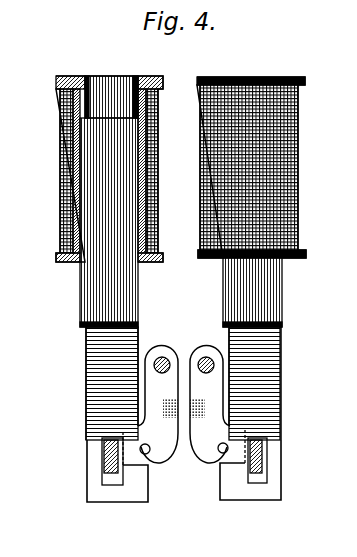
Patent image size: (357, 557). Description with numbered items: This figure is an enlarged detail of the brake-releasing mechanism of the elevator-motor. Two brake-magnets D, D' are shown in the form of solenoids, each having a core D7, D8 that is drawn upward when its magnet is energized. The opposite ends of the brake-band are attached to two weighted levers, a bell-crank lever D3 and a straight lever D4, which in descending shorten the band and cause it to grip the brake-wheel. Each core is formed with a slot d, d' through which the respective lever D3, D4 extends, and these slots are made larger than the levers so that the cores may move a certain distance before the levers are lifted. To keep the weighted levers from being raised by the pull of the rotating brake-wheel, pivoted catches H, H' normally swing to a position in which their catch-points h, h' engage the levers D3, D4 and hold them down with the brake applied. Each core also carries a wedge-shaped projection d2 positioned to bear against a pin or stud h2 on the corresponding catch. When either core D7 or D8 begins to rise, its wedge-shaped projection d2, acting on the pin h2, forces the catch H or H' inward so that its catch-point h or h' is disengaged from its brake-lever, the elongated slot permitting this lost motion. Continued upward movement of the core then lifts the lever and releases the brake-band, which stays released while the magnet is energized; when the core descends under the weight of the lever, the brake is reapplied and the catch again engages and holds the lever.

The brake-magnet D is at (100, 201).
The brake-magnet D' is at (261, 202).
The magnet-core D7 is at (87, 345).
The magnet-core D8 is at (282, 345).
The weighted bell-crank lever D3 is at (104, 462).
The weighted straight lever D4 is at (264, 460).
The slot d is at (117, 482).
The slot d' is at (250, 482).
The wedge-shaped projection d2 is at (220, 470).
The catch H is at (158, 405).
The catch H' is at (210, 405).
The catch-point h is at (138, 440).
The catch-point h' is at (234, 438).
The pin or stud h2 is at (219, 450).